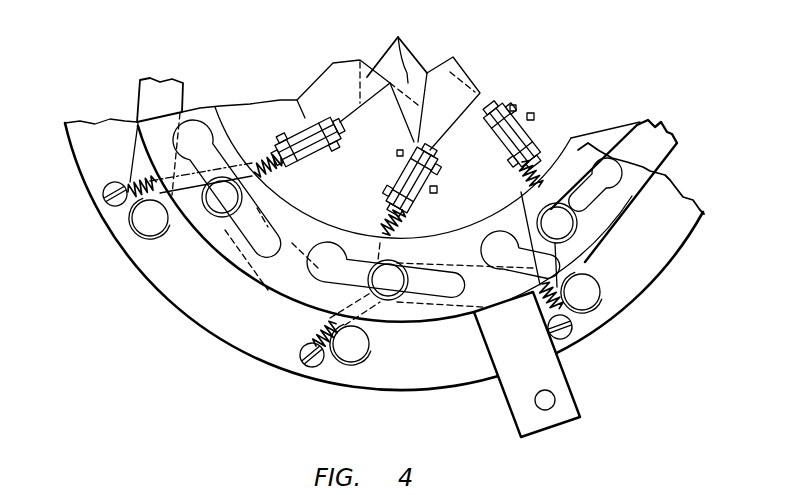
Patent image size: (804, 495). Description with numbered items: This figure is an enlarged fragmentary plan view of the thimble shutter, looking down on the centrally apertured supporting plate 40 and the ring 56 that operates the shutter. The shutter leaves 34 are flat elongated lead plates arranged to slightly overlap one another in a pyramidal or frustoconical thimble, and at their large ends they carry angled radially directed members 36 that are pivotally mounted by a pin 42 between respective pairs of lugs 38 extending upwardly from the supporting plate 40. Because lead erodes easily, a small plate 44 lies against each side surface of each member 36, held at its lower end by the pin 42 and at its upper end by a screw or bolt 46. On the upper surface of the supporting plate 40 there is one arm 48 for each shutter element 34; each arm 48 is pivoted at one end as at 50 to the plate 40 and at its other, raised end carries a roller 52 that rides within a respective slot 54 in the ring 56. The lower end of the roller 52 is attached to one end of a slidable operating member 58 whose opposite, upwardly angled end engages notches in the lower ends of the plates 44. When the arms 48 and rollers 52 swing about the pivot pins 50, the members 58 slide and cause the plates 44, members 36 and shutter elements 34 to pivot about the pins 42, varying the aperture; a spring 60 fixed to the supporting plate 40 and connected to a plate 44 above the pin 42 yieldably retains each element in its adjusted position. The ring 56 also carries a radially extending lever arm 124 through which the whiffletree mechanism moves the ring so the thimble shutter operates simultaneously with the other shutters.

The shutter elements or leaves 34 is at (397, 48).
The angled radially directed members 36 is at (420, 147).
The lugs 38 is at (393, 191).
The supporting plate 40 is at (677, 257).
The pin 42 is at (436, 191).
The small plate 44 is at (423, 157).
The screw or bolt 46 is at (400, 152).
The arms 48 is at (183, 93).
The pivot 50 is at (365, 357).
The roller 52 is at (578, 224).
The slot 54 is at (622, 186).
The ring 56 is at (232, 253).
The slidable operating member 58 is at (415, 234).
The spring 60 is at (312, 324).
The lever arm 124 is at (567, 395).